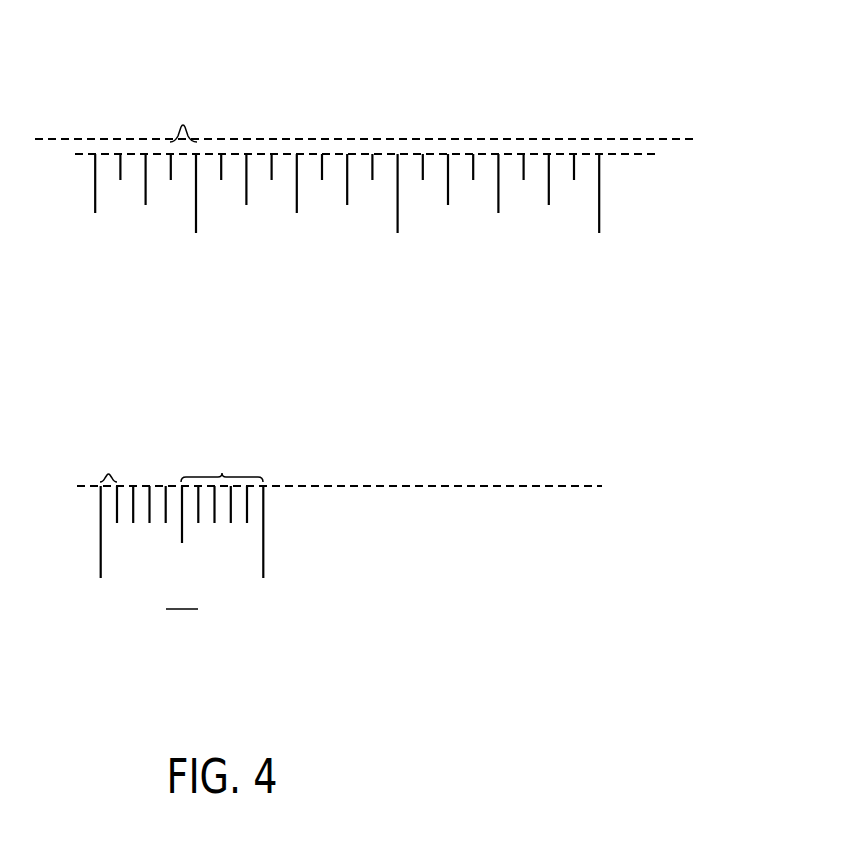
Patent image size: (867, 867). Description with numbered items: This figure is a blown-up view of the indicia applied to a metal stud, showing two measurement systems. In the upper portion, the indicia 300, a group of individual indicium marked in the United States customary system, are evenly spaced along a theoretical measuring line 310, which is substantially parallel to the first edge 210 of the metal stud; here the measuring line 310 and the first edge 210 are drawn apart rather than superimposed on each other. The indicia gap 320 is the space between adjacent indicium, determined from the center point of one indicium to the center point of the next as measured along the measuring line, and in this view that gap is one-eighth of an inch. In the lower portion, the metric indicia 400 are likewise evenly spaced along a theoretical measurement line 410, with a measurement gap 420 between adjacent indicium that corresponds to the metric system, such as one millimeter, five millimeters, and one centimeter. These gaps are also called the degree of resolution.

The first edge of metal stud 210 is at (635, 139).
The indicia 300 is at (371, 151).
The theoretical measuring line 310 is at (625, 163).
The indicia gap 320 is at (205, 120).
The metric indicia 400 is at (378, 527).
The theoretical measurement line 410 is at (317, 487).
The measurement gap 420 is at (118, 448).